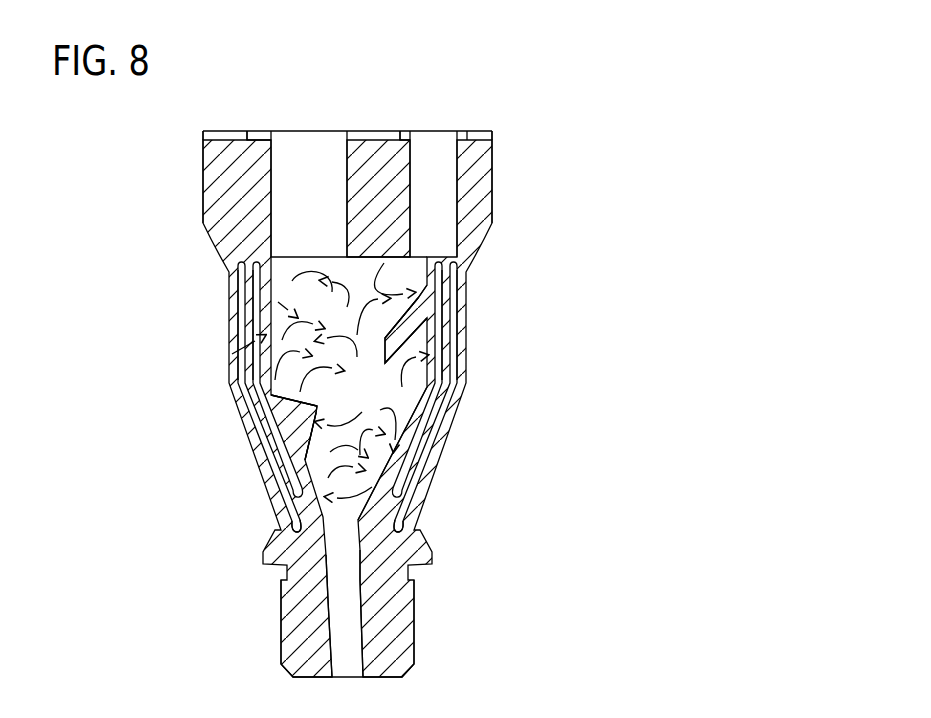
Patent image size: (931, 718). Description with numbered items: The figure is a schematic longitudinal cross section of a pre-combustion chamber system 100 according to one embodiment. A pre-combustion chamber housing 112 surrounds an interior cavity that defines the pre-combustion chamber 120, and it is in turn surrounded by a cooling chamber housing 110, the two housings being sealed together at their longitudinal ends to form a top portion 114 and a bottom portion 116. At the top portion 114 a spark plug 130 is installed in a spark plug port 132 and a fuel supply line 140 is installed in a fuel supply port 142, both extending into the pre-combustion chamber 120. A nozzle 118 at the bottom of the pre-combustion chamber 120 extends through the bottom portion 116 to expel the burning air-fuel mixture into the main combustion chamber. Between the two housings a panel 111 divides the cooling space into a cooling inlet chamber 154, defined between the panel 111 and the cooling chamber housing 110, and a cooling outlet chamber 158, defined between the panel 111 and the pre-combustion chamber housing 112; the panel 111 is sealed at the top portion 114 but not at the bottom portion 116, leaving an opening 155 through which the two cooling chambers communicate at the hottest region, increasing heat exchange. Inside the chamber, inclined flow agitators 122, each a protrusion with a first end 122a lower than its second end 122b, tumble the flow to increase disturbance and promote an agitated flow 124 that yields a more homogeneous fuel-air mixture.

The pre-combustion chamber system 100 is at (552, 93).
The top portion 114 is at (492, 178).
The cooling chamber housing 110 is at (232, 310).
The panel 111 is at (258, 406).
The pre-combustion chamber housing 112 is at (266, 318).
The cooling outlet chamber 158 is at (240, 350).
The agitated flow 124 is at (285, 302).
The pre-combustion chamber 120 is at (372, 400).
The inclined flow agitator 122 is at (295, 440).
The first end 122a is at (303, 458).
The second end 122b is at (283, 396).
The cooling inlet chamber 154 is at (452, 392).
The opening 155 is at (298, 514).
The bottom portion 116 is at (416, 602).
The nozzle 118 is at (366, 620).
The spark plug 130 is at (306, 160).
The spark plug port 132 is at (260, 135).
The fuel supply line 140 is at (437, 160).
The fuel supply port 142 is at (405, 135).